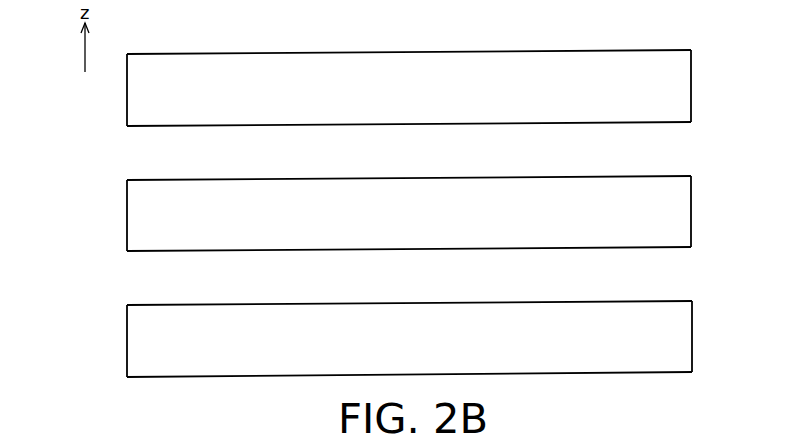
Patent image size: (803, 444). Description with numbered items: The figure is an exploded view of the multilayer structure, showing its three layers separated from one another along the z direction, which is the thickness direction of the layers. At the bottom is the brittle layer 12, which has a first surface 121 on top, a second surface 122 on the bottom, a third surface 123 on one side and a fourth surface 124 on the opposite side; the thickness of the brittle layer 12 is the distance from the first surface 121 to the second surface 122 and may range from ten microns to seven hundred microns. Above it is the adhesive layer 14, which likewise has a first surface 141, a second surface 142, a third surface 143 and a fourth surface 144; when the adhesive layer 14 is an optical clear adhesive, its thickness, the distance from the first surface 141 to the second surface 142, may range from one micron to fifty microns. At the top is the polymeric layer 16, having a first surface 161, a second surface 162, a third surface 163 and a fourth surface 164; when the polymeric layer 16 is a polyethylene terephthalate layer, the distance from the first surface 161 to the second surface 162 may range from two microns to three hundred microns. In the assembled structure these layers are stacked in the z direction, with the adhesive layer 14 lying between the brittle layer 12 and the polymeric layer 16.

The brittle layer 12 is at (403, 334).
The first surface 121 is at (212, 293).
The second surface 122 is at (180, 377).
The third surface 123 is at (127, 344).
The fourth surface 124 is at (692, 336).
The adhesive layer 14 is at (403, 209).
The first surface 141 is at (212, 167).
The second surface 142 is at (178, 251).
The third surface 143 is at (127, 219).
The fourth surface 144 is at (692, 210).
The polymeric layer 16 is at (403, 83).
The first surface 161 is at (207, 52).
The second surface 162 is at (178, 126).
The third surface 163 is at (127, 95).
The fourth surface 164 is at (692, 85).